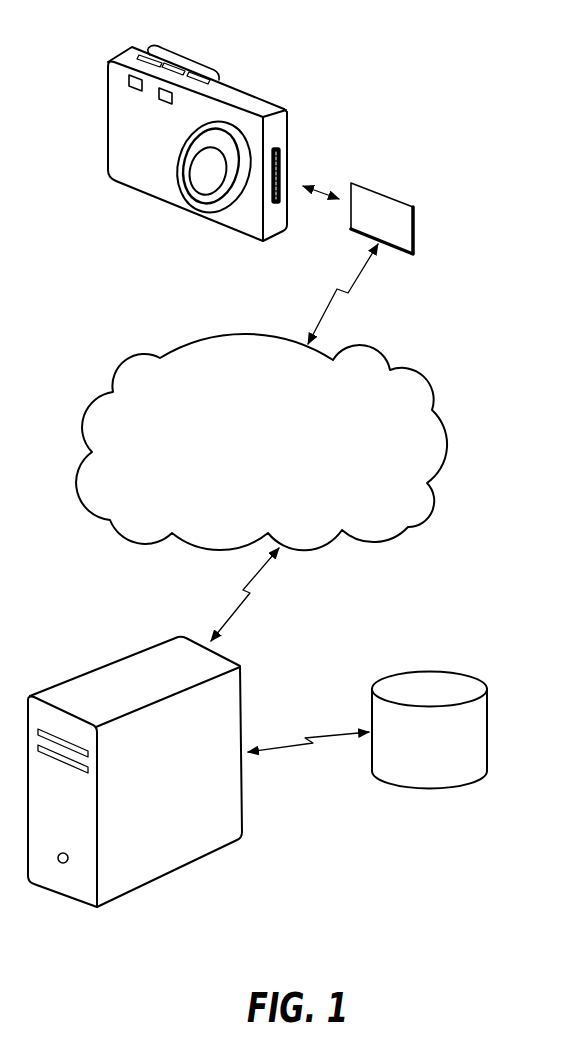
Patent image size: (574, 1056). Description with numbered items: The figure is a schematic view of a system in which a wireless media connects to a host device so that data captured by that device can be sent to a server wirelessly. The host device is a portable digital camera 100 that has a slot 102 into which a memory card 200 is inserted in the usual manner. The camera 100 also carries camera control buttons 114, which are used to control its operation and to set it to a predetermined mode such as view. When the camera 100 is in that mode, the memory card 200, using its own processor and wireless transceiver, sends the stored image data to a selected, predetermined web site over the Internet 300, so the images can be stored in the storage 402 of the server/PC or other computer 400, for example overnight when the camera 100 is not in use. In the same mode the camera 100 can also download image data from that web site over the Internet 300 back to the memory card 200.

The digital camera 100 is at (231, 122).
The slot 102 is at (281, 175).
The camera control buttons 114 is at (182, 55).
The memory card 200 is at (382, 200).
The Internet 300 is at (422, 377).
The server/PC or other computer 400 is at (127, 665).
The storage 402 is at (430, 673).